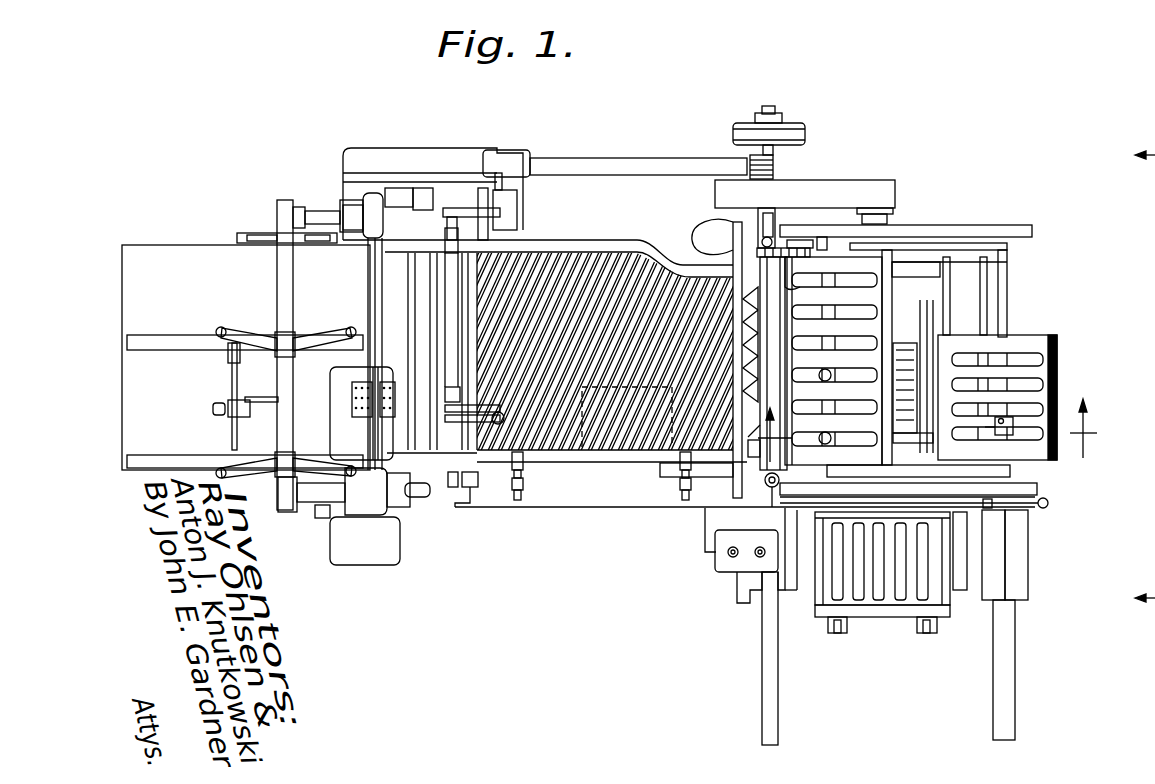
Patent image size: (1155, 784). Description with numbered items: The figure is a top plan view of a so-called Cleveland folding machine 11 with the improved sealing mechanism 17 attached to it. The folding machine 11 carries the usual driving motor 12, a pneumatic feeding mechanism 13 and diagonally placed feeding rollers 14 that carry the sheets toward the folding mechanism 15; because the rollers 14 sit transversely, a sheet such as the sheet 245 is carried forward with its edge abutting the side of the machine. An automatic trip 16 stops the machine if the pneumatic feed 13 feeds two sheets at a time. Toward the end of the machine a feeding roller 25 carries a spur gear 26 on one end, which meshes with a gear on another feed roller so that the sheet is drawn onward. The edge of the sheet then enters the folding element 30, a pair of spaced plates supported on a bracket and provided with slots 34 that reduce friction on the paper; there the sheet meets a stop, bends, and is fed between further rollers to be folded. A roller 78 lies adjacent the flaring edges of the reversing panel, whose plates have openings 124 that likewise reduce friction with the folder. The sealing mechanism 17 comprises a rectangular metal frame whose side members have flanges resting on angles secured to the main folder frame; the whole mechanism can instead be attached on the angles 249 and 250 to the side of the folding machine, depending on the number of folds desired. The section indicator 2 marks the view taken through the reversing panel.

The folding machine 11 is at (572, 231).
The driving motor 12 is at (862, 180).
The feeding mechanism 13 is at (338, 368).
The feeding rollers 14 is at (607, 260).
The folding mechanism 15 is at (857, 298).
The automatic trip 16 is at (498, 425).
The sealing mechanism 17 is at (1016, 309).
The feeding roller 25 is at (768, 298).
The spur gear 26 is at (768, 255).
The folding element 30 is at (848, 262).
The slots 34 is at (862, 377).
The roller 78 is at (927, 347).
The openings 124 is at (1033, 382).
The sheet 245 is at (568, 454).
The angle 249 is at (783, 702).
The angle 250 is at (1007, 675).
The section line 2 is at (1095, 428).